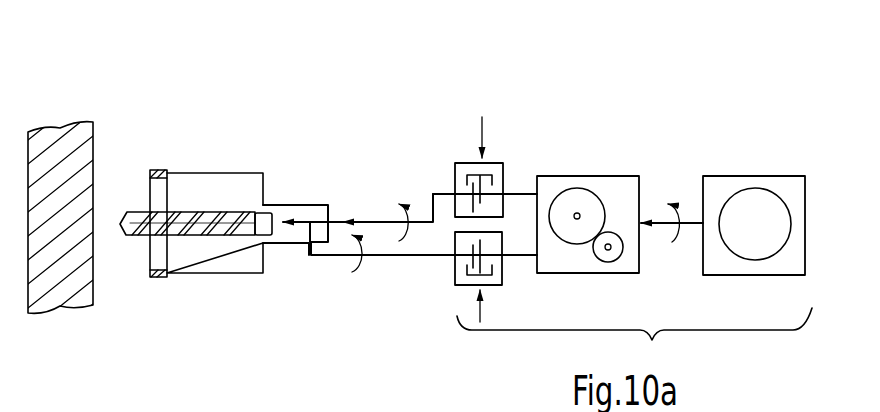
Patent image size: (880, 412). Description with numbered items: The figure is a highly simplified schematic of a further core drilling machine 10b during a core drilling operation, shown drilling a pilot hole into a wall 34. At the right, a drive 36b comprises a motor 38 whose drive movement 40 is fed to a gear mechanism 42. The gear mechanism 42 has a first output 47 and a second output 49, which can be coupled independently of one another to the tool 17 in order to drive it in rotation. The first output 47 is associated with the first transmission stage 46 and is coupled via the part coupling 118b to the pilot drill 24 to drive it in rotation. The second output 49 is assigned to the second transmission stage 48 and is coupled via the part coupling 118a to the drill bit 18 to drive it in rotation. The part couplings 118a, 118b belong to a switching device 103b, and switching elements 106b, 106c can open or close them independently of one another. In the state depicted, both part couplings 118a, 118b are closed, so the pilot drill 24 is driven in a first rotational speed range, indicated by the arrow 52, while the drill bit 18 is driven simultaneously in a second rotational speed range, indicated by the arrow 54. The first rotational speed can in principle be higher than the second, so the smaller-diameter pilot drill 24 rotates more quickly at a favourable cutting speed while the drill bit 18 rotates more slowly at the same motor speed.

The core drilling machine 10b is at (671, 153).
The tool 17 is at (172, 214).
The drill bit 18 is at (222, 170).
The pilot drill 24 is at (138, 237).
The wall / workpiece 34 is at (63, 147).
The drive 36b is at (634, 337).
The motor 38 is at (745, 176).
The drive movement 40 is at (690, 200).
The gear mechanism 42 is at (572, 175).
The first transmission stage 46 is at (328, 257).
The first output 47 is at (516, 257).
The second transmission stage 48 is at (372, 213).
The second output 49 is at (520, 193).
The first rotational speed 52 is at (373, 268).
The second rotational speed 54 is at (420, 200).
The clutch unit 103b is at (478, 217).
The switching element 106b is at (444, 160).
The switching element 106c is at (440, 295).
The part coupling 118a is at (477, 198).
The part coupling 118b is at (435, 299).